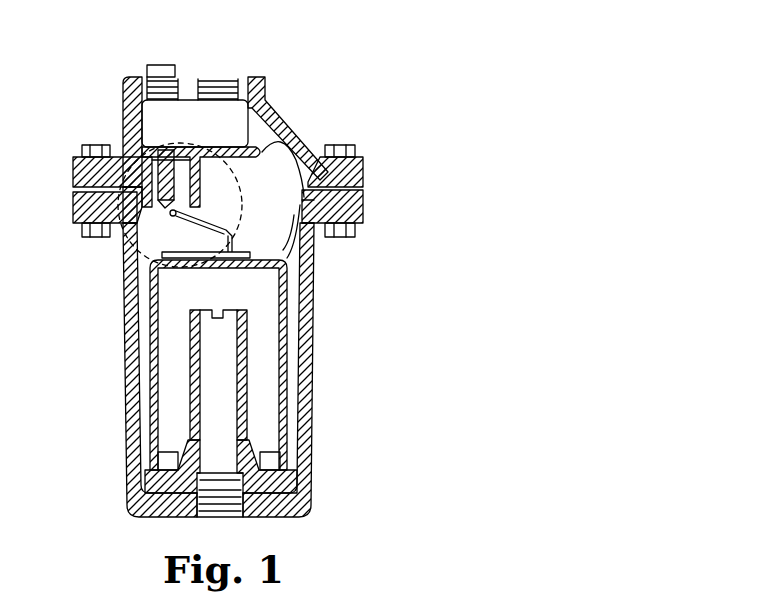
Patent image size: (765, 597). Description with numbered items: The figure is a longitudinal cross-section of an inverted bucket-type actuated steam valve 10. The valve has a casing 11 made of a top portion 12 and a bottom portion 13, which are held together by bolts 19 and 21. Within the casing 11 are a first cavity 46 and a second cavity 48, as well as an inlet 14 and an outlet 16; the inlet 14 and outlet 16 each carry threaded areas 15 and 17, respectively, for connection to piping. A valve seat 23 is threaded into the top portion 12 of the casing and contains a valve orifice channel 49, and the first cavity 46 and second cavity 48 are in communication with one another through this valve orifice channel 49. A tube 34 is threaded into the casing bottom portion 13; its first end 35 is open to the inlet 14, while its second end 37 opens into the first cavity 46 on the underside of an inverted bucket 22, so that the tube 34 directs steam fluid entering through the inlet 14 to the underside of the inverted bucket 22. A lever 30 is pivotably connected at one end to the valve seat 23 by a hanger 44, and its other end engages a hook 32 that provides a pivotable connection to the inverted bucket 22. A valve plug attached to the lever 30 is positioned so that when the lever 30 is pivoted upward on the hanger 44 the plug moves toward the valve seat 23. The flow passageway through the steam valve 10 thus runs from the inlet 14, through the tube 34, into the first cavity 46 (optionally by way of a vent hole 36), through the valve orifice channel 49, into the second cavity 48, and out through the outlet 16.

The actuated steam valve 10 is at (300, 82).
The casing 11 is at (363, 166).
The top portion 12 is at (285, 133).
The bottom portion 13 is at (306, 290).
The inlet 14 is at (252, 508).
The threaded area 15 is at (205, 507).
The outlet 16 is at (214, 82).
The threaded area 17 is at (206, 80).
The bolt 19 is at (96, 145).
The bolt 21 is at (344, 143).
The inverted bucket 22 is at (153, 352).
The valve seat 23 is at (185, 205).
The lever 30 is at (178, 220).
The hook 32 is at (182, 235).
The tube 34 is at (246, 367).
The first end 35 is at (265, 453).
The vent hole 36 is at (322, 249).
The second end 37 is at (245, 316).
The hanger 44 is at (122, 235).
The first cavity 46 is at (288, 250).
The second cavity 48 is at (183, 125).
The valve orifice channel 49 is at (165, 178).